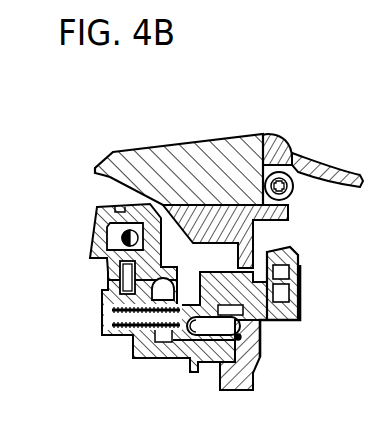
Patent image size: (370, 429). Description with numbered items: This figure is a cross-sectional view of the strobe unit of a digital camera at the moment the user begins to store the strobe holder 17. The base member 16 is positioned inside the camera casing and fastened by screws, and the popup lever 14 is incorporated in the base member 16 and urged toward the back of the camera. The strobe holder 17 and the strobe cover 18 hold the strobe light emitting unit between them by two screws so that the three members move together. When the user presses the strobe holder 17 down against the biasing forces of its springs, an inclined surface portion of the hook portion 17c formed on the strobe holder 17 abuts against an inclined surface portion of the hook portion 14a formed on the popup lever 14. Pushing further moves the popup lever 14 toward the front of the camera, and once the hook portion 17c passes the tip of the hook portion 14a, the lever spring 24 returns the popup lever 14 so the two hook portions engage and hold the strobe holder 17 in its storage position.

The popup lever 14 is at (172, 330).
The hook portion 14a is at (230, 290).
The base member 16 is at (90, 253).
The strobe holder 17 is at (292, 208).
The hook portion 17c is at (266, 312).
The strobe cover 18 is at (147, 143).
The lever spring 24 is at (118, 328).